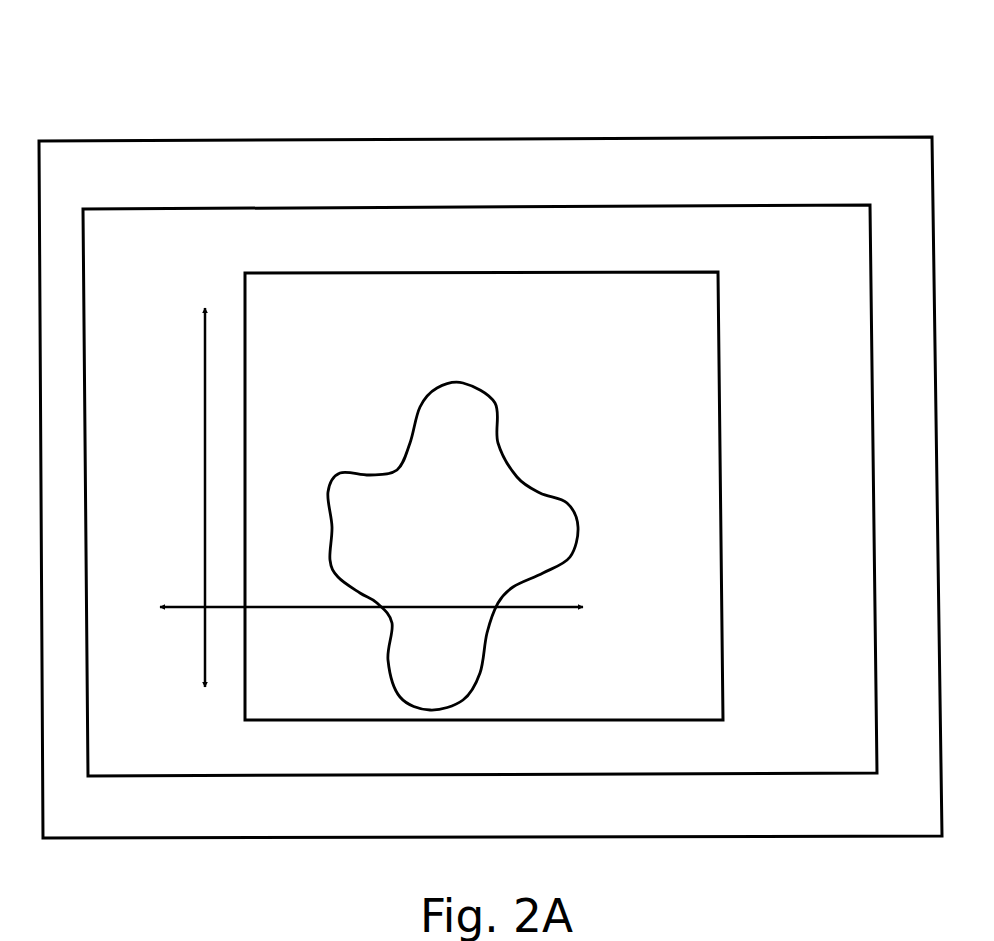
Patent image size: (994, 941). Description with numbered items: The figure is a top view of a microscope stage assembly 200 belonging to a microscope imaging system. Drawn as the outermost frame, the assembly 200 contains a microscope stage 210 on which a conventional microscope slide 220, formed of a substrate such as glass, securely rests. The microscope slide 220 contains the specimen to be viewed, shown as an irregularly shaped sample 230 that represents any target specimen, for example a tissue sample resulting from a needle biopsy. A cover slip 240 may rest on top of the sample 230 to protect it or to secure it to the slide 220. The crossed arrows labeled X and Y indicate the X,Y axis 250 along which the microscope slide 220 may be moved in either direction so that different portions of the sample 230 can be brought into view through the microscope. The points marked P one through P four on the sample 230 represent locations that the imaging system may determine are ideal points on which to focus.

The microscope stage assembly 200 is at (237, 97).
The microscope stage 210 is at (312, 184).
The microscope slide 220 is at (785, 261).
The sample 230 is at (393, 470).
The cover slip 240 is at (410, 341).
The X,Y axis 250 is at (193, 622).